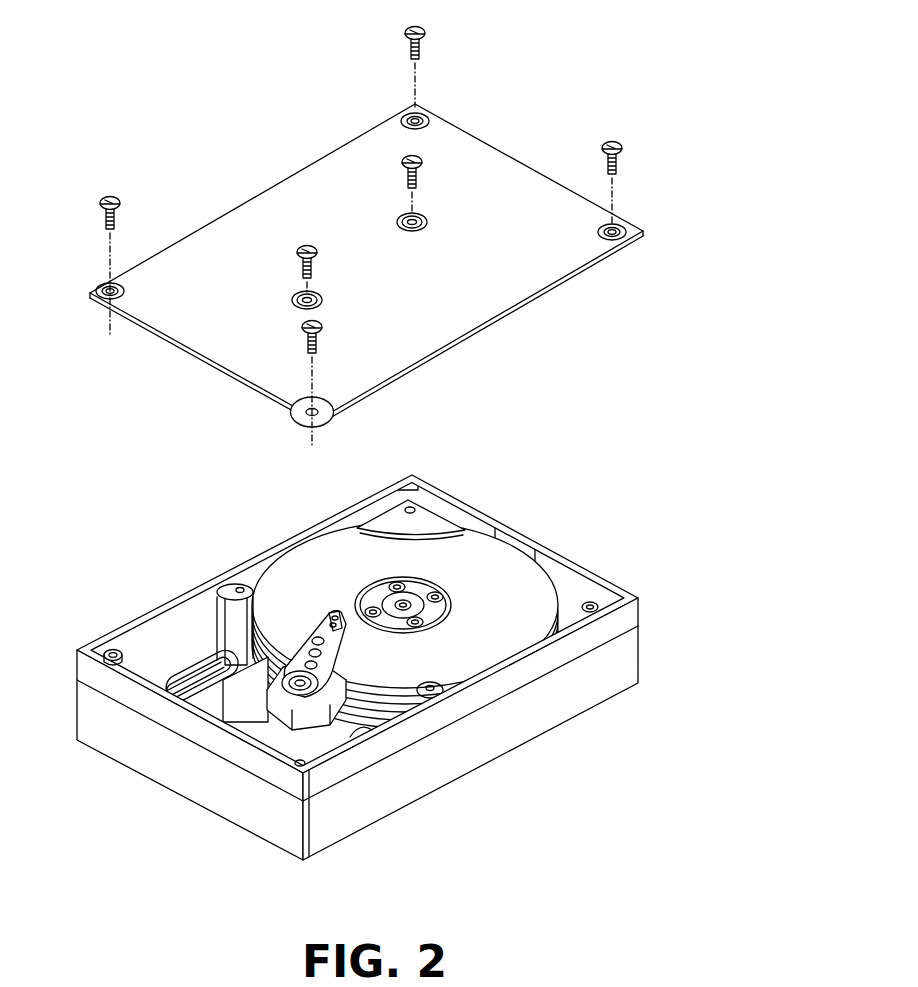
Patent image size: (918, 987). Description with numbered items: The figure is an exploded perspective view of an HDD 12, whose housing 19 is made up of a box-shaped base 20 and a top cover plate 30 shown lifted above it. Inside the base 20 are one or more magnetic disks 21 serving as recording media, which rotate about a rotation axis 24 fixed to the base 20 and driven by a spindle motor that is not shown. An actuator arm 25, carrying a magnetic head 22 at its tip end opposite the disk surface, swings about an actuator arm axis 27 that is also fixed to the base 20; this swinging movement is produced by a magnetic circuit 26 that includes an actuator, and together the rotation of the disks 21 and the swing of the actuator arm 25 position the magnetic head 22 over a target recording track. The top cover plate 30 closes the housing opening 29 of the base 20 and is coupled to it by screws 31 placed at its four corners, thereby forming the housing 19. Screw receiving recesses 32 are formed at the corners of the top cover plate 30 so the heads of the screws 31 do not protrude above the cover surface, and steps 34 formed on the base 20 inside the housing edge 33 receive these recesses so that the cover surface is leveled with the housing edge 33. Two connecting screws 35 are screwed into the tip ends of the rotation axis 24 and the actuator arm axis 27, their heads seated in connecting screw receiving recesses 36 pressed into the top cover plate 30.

The HDD 12 is at (578, 114).
The housing 19 is at (572, 332).
The base 20 is at (357, 644).
The magnetic disk 21 is at (420, 707).
The magnetic head 22 is at (337, 614).
The rotation axis 24 is at (405, 600).
The actuator arm 25 is at (338, 660).
The magnetic circuit 26 is at (370, 727).
The actuator arm axis 27 is at (298, 674).
The housing opening 29 is at (182, 623).
The top cover plate 30 is at (538, 296).
The screw 31 is at (99, 205).
The screw receiving recess 32 is at (430, 110).
The housing edge 33 is at (540, 648).
The step 34 is at (120, 661).
The connecting screw 35 is at (402, 167).
The connecting screw receiving recess 36 is at (427, 220).